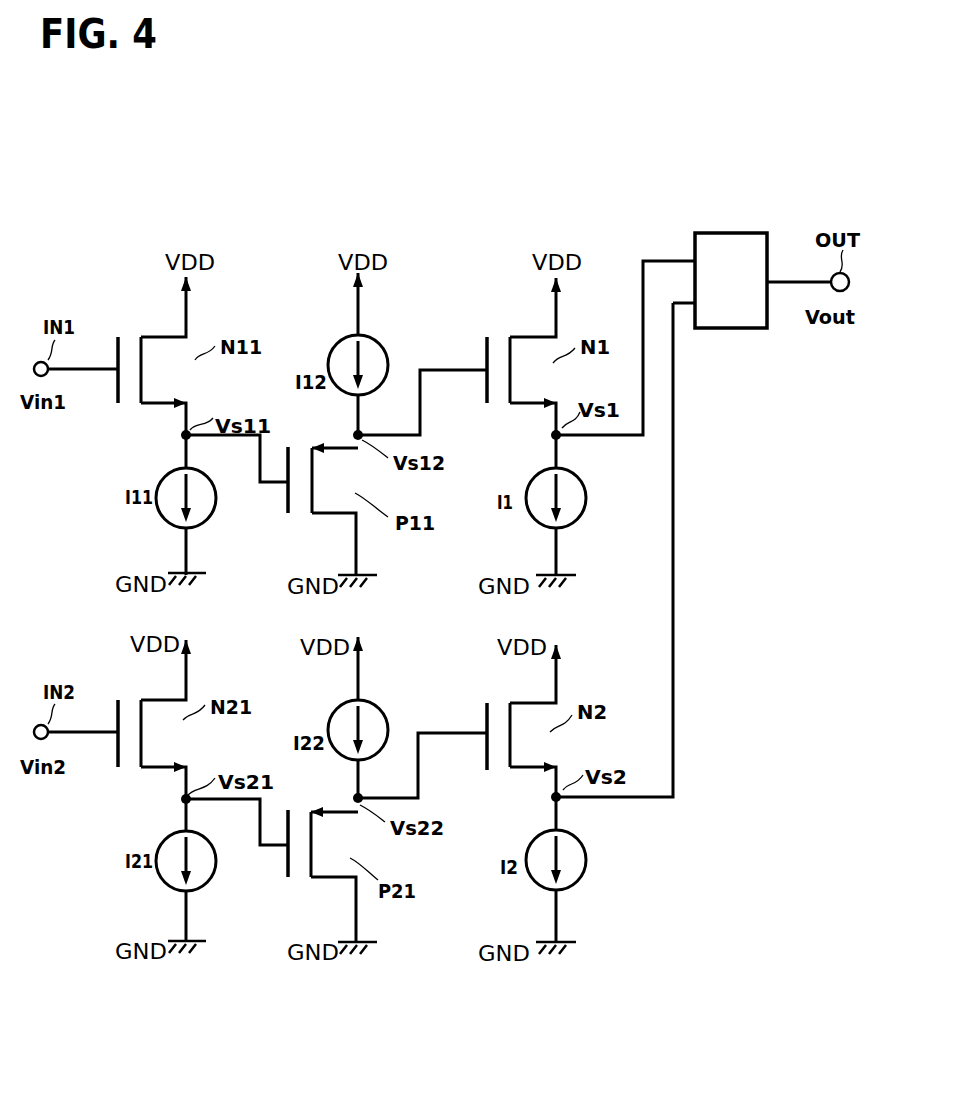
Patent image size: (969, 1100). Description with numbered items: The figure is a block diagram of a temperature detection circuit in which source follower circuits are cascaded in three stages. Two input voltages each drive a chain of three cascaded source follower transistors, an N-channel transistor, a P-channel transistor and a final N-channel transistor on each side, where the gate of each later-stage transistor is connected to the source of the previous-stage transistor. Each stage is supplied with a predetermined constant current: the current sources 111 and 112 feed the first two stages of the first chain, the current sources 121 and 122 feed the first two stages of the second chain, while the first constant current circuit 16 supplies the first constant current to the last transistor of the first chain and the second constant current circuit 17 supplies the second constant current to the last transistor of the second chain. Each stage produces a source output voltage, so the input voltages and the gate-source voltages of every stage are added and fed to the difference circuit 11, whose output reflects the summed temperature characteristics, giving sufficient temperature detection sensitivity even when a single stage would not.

The difference circuit 11 is at (715, 233).
The first constant current circuit 16 is at (582, 478).
The second constant current circuit 17 is at (582, 845).
The current source I11 111 is at (215, 510).
The current source I12 112 is at (375, 335).
The current source I21 121 is at (215, 873).
The current source I22 122 is at (373, 700).